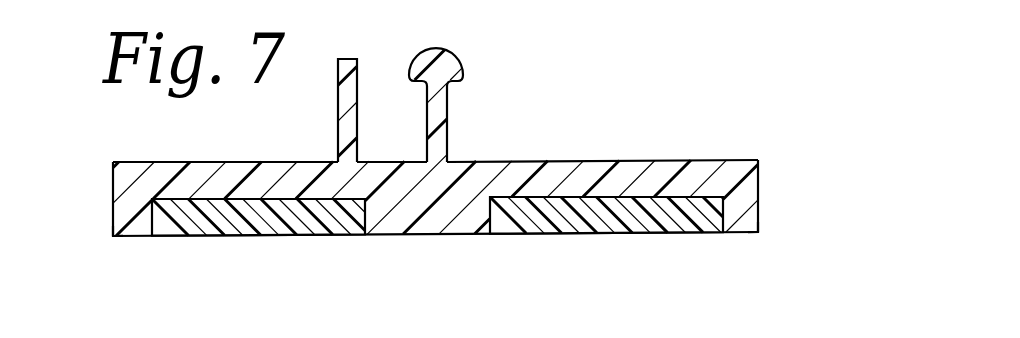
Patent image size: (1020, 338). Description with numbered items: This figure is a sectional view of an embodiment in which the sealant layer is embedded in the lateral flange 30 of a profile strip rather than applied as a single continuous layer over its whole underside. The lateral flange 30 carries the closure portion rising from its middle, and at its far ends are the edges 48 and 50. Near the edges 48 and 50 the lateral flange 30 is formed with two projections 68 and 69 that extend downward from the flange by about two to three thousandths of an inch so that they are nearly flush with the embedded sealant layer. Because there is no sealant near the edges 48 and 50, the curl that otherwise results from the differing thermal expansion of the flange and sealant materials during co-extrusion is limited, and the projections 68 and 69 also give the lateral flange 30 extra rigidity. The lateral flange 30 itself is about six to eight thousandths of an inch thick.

The lateral flange 30 is at (618, 151).
The edge 48 is at (760, 187).
The edge 50 is at (113, 183).
The projection 68 is at (752, 231).
The projection 69 is at (114, 226).